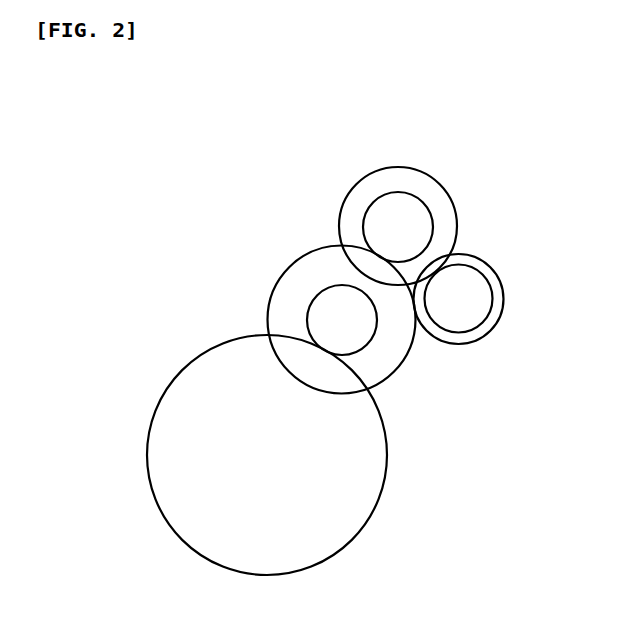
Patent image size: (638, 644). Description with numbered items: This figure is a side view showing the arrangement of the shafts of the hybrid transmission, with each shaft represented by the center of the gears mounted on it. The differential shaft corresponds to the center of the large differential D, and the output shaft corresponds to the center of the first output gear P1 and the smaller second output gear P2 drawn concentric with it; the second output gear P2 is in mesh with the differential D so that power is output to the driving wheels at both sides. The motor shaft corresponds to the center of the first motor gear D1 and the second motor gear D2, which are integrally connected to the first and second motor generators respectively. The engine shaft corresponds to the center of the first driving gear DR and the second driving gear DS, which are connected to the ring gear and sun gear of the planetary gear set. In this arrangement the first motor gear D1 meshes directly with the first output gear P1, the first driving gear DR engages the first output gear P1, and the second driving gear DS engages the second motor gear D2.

The differential D is at (187, 362).
The first output gear P1 is at (393, 373).
The second output gear P2 is at (313, 298).
The first motor gear D1 is at (410, 193).
The second motor gear D2 is at (455, 212).
The first driving gear DR is at (497, 267).
The second driving gear DS is at (490, 317).